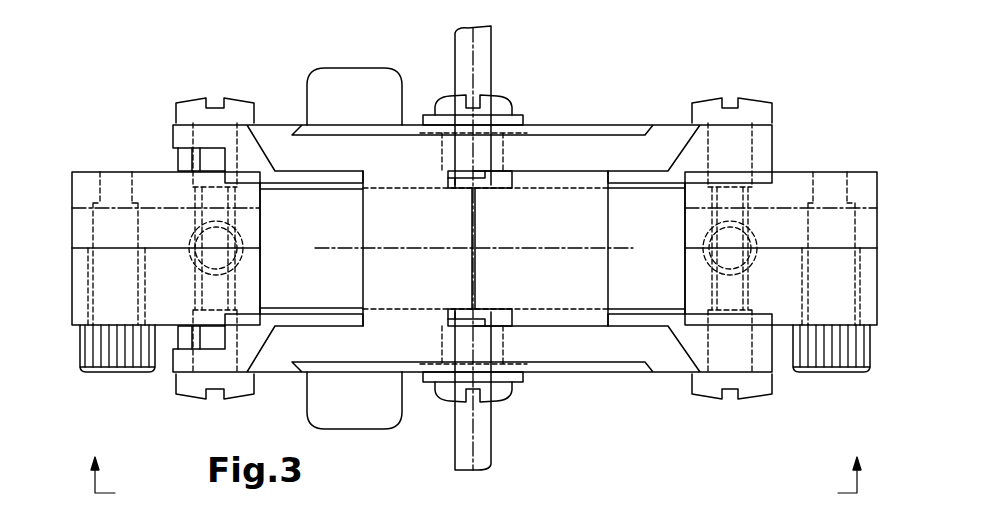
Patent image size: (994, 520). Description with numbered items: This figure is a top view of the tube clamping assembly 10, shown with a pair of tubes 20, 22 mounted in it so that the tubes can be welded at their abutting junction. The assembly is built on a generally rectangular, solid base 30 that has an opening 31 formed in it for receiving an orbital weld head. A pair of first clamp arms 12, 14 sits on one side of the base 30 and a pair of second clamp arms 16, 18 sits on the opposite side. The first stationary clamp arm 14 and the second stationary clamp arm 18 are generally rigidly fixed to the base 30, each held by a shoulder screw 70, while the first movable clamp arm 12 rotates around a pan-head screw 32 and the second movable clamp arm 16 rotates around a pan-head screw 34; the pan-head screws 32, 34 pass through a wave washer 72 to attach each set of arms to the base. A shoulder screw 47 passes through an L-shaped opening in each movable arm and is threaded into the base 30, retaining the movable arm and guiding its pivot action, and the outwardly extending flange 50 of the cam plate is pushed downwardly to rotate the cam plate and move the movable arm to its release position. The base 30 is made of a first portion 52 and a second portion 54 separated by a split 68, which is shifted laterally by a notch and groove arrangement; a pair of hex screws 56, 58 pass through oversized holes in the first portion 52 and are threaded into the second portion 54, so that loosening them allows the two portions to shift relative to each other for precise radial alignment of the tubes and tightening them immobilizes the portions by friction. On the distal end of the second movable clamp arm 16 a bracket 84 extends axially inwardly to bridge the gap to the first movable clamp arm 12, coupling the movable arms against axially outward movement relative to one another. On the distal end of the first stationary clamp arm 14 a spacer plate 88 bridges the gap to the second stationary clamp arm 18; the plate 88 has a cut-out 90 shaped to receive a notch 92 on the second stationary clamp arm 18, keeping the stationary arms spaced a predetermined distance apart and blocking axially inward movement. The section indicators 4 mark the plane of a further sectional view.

The tube clamping assembly 10 is at (707, 47).
The first movable clamp arm 12 is at (345, 318).
The first stationary clamp arm 14 is at (638, 322).
The second movable clamp arm 16 is at (340, 180).
The second stationary clamp arm 18 is at (635, 178).
The tube 20 is at (485, 443).
The tube 22 is at (485, 38).
The base 30 is at (68, 238).
The opening 31 is at (293, 218).
The pan-head screw 32 is at (505, 392).
The pan-head screw 34 is at (502, 107).
The shoulder screw 47 is at (193, 110).
The flange 50 is at (350, 105).
The first portion 52 is at (108, 293).
The second portion 54 is at (84, 188).
The hex screw 56 is at (123, 357).
The hex screw 58 is at (837, 353).
The split 68 is at (173, 248).
The shoulder screw 70 is at (760, 110).
The wave washer 72 is at (518, 118).
The bracket 84 is at (415, 217).
The spacer plate 88 is at (545, 310).
The cut-out 90 is at (513, 178).
The notch 92 is at (465, 182).
The section line 4 is at (477, 461).